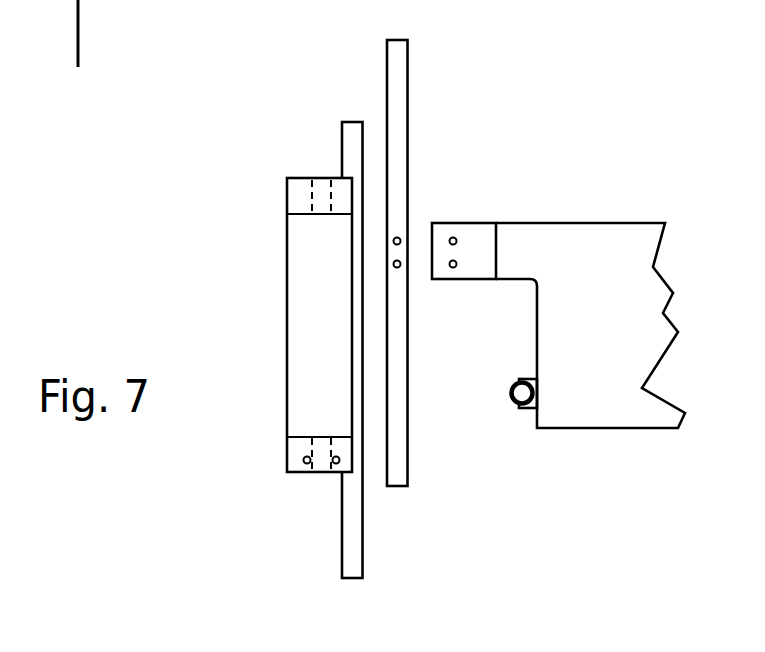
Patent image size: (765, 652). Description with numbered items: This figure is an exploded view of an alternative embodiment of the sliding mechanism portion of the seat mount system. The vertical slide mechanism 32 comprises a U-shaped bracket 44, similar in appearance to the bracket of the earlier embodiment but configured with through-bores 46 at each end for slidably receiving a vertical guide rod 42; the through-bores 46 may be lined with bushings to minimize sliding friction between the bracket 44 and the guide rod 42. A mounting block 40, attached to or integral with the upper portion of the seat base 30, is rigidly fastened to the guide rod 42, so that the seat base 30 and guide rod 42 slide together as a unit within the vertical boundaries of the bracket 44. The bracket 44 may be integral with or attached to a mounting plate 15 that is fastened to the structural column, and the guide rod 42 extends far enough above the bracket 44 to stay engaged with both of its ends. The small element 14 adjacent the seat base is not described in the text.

The vertical slide mechanism 32 is at (300, 56).
The vertical guide rod 42 is at (408, 97).
The through-bores 46 is at (322, 188).
The U-shaped bracket 44 is at (287, 278).
The mounting block 40 is at (452, 222).
The seat base 30 is at (572, 222).
The pin 14 is at (522, 407).
The mounting plate 15 is at (363, 525).